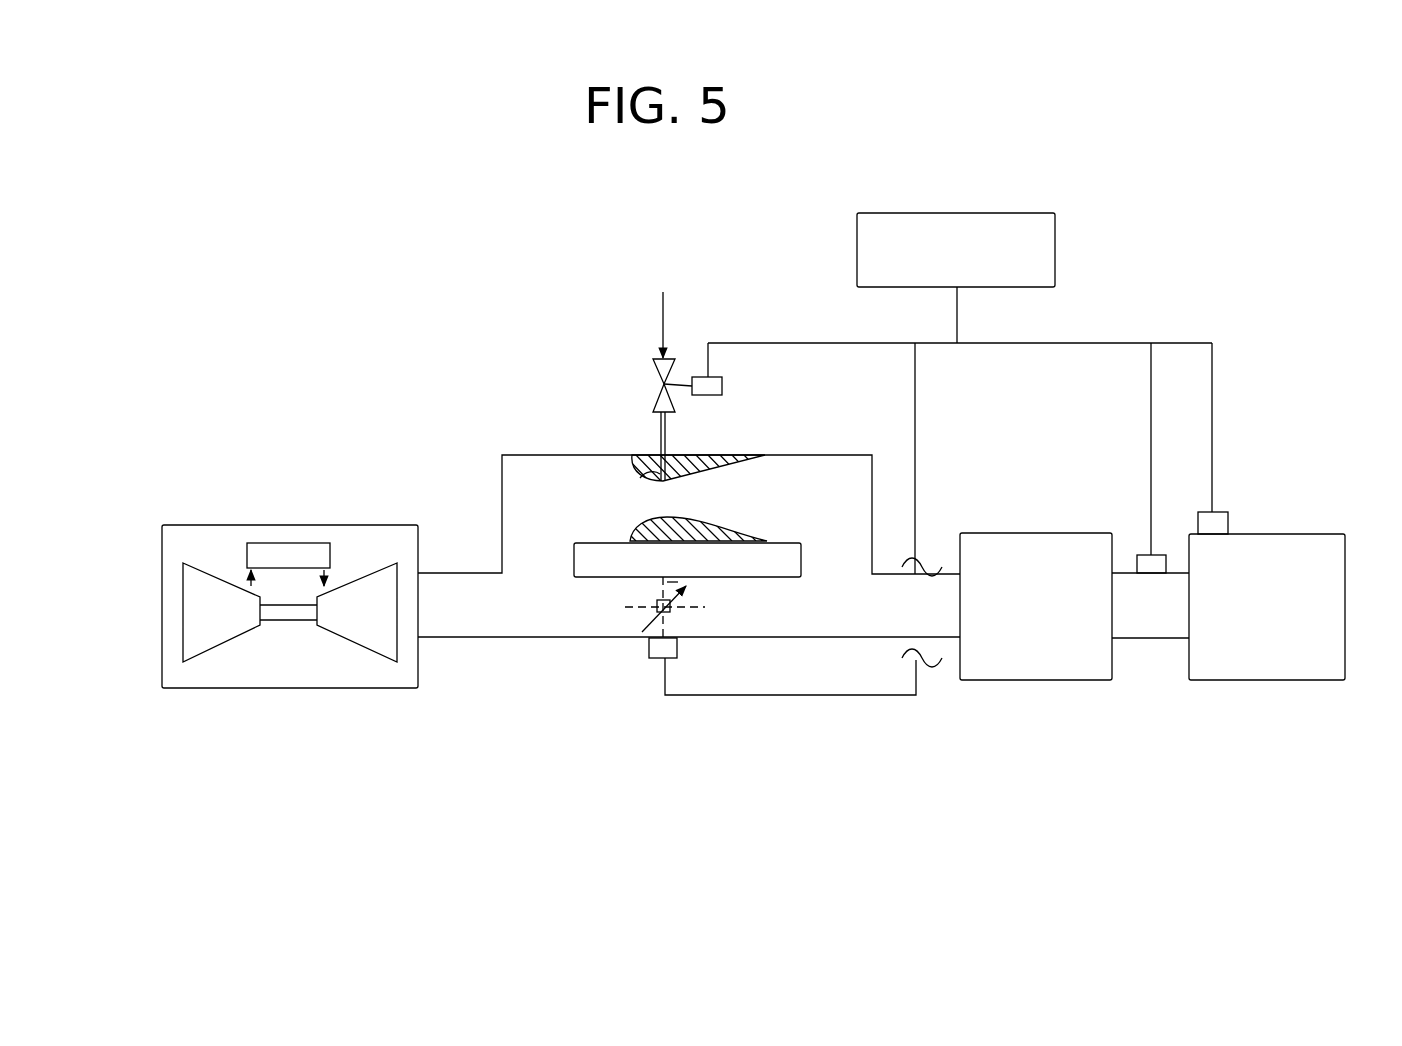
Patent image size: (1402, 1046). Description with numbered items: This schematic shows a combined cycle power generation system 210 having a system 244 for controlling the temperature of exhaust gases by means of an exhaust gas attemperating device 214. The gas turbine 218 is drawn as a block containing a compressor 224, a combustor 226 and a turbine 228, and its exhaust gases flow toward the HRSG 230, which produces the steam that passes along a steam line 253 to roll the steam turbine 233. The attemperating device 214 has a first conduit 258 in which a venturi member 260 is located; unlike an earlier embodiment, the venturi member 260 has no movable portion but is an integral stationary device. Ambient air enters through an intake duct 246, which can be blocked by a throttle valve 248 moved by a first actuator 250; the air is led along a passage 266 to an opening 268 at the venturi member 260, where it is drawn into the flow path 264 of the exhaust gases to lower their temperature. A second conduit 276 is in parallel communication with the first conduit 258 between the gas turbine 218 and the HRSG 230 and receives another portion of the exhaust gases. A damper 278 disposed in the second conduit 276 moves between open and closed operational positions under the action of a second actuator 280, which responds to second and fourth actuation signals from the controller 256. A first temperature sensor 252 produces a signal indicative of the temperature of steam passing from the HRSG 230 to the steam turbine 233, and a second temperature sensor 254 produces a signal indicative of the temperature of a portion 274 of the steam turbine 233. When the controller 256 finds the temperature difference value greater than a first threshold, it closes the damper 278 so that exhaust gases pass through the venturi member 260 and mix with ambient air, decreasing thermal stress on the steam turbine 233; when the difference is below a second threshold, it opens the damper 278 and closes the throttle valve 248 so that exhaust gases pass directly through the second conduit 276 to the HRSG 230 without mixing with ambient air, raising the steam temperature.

The power generation system 210 is at (168, 705).
The exhaust gas attemperating device 214 is at (528, 372).
The gas turbine 218 is at (165, 525).
The compressor 224 is at (183, 585).
The combustor 226 is at (267, 543).
The turbine 228 is at (378, 562).
The HRSG 230 is at (984, 533).
The steam turbine 233 is at (1312, 533).
The system 244 is at (1103, 271).
The intake duct 246 is at (659, 414).
The throttle valve 248 is at (653, 367).
The first actuator 250 is at (722, 386).
The first temperature sensor 252 is at (1143, 555).
The steam line 253 is at (1147, 639).
The second temperature sensor 254 is at (1226, 512).
The controller 256 is at (857, 213).
The first conduit 258 is at (504, 455).
The venturi member 260 is at (742, 476).
The flow path 264 is at (727, 510).
The air conduit 266 is at (660, 445).
The air outlet 268 is at (653, 474).
The portion 274 is at (1190, 532).
The second conduit 276 is at (540, 638).
The damper 278 is at (688, 595).
The second actuator 280 is at (660, 660).